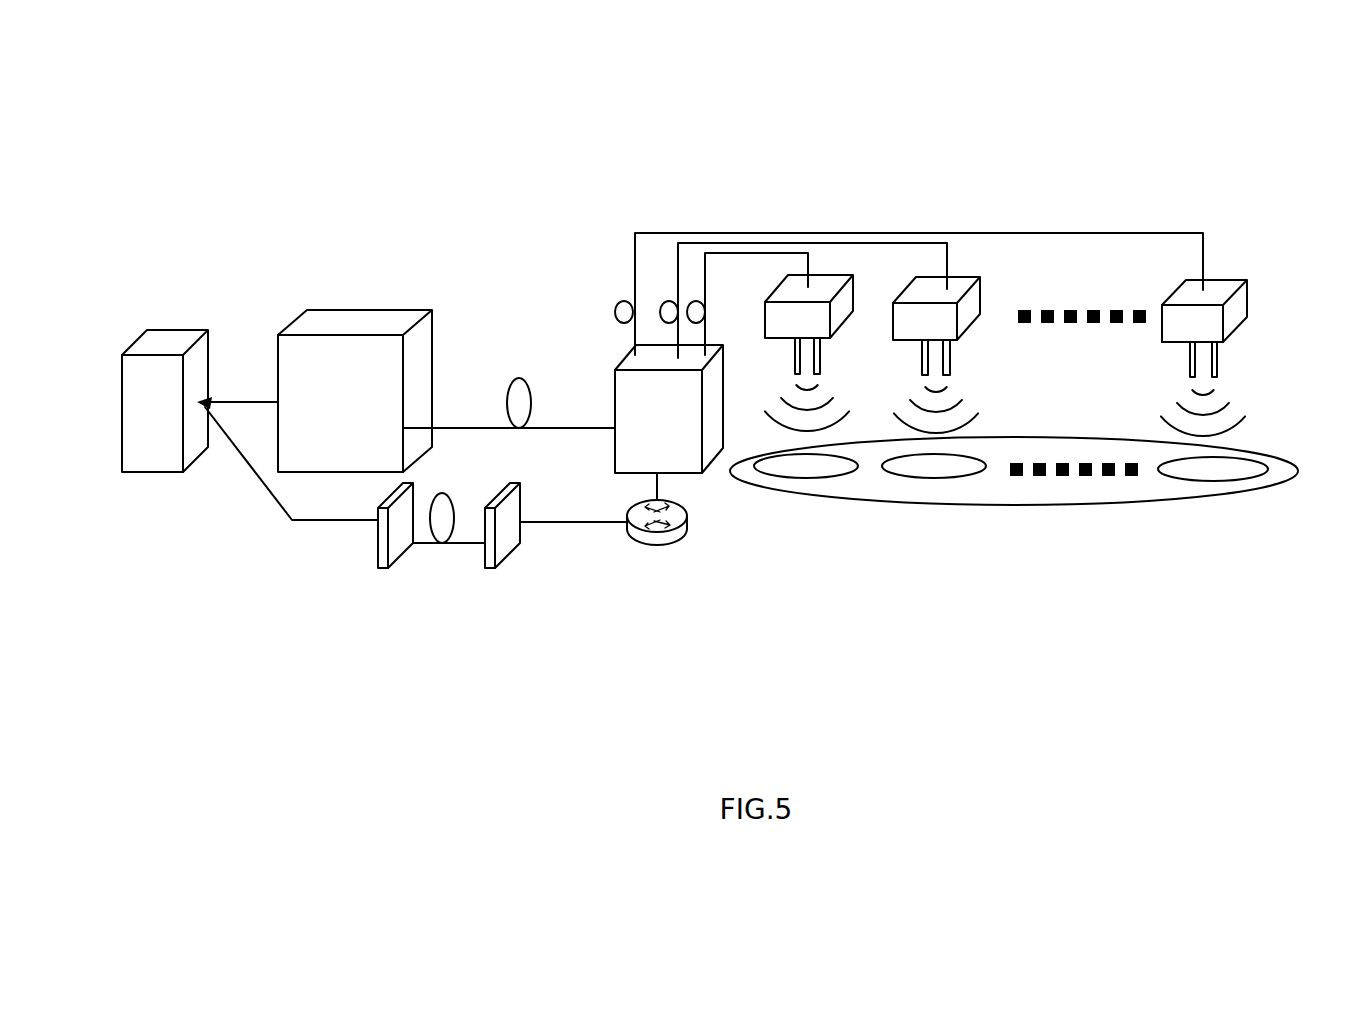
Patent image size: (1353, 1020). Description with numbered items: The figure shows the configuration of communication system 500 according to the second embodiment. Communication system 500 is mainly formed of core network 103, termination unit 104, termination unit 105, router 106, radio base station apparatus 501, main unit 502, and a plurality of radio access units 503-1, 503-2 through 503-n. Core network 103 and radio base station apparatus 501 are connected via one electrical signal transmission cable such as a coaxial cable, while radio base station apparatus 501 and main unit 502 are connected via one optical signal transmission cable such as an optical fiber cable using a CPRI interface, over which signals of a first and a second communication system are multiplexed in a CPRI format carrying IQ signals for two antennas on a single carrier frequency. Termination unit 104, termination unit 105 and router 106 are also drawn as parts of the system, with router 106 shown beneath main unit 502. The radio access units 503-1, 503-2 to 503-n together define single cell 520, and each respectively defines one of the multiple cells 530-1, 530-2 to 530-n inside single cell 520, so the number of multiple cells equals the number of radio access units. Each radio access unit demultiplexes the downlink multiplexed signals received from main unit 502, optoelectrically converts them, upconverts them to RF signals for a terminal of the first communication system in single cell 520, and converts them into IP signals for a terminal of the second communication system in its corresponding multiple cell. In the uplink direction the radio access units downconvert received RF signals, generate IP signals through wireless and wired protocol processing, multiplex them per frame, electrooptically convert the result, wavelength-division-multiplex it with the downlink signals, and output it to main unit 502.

The communication system 500 is at (728, 78).
The core network (CN) 103 is at (172, 327).
The radio base station apparatus 501 is at (360, 307).
The main unit 502 is at (615, 380).
The termination unit (OLT) 104 is at (398, 548).
The termination unit (ONU) 105 is at (508, 548).
The router 106 is at (653, 538).
The radio access unit 503-1 is at (878, 281).
The radio access unit 503-2 is at (1007, 280).
The radio access unit 503-n is at (1247, 300).
The single cell 520 is at (1014, 502).
The multiple cell 530-1 is at (810, 503).
The multiple cell 530-2 is at (936, 503).
The multiple cell 530-n is at (1220, 507).